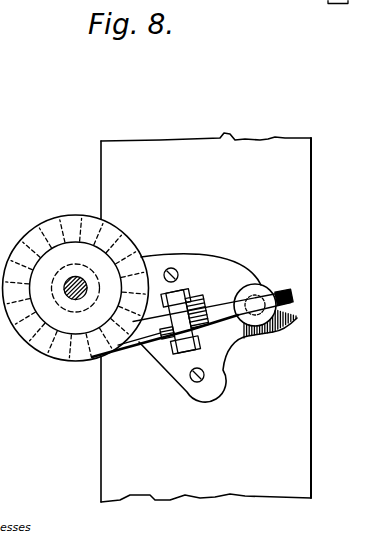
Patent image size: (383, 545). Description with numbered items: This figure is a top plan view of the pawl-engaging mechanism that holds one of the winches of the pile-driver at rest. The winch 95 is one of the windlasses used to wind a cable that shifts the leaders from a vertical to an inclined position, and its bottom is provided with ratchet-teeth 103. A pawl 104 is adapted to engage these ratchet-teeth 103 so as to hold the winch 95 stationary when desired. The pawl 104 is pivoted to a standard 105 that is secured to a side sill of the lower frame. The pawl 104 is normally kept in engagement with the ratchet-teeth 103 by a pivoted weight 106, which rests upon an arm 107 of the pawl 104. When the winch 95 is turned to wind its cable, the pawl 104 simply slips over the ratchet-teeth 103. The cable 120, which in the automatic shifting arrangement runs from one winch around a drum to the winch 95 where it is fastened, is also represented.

The winch 95 is at (78, 288).
The ratchet-teeth 103 is at (140, 256).
The pawl 104 is at (130, 340).
The standard 105 is at (173, 332).
The pivoted weight 106 is at (262, 281).
The arm 107 is at (292, 291).
The cable 120 is at (219, 317).